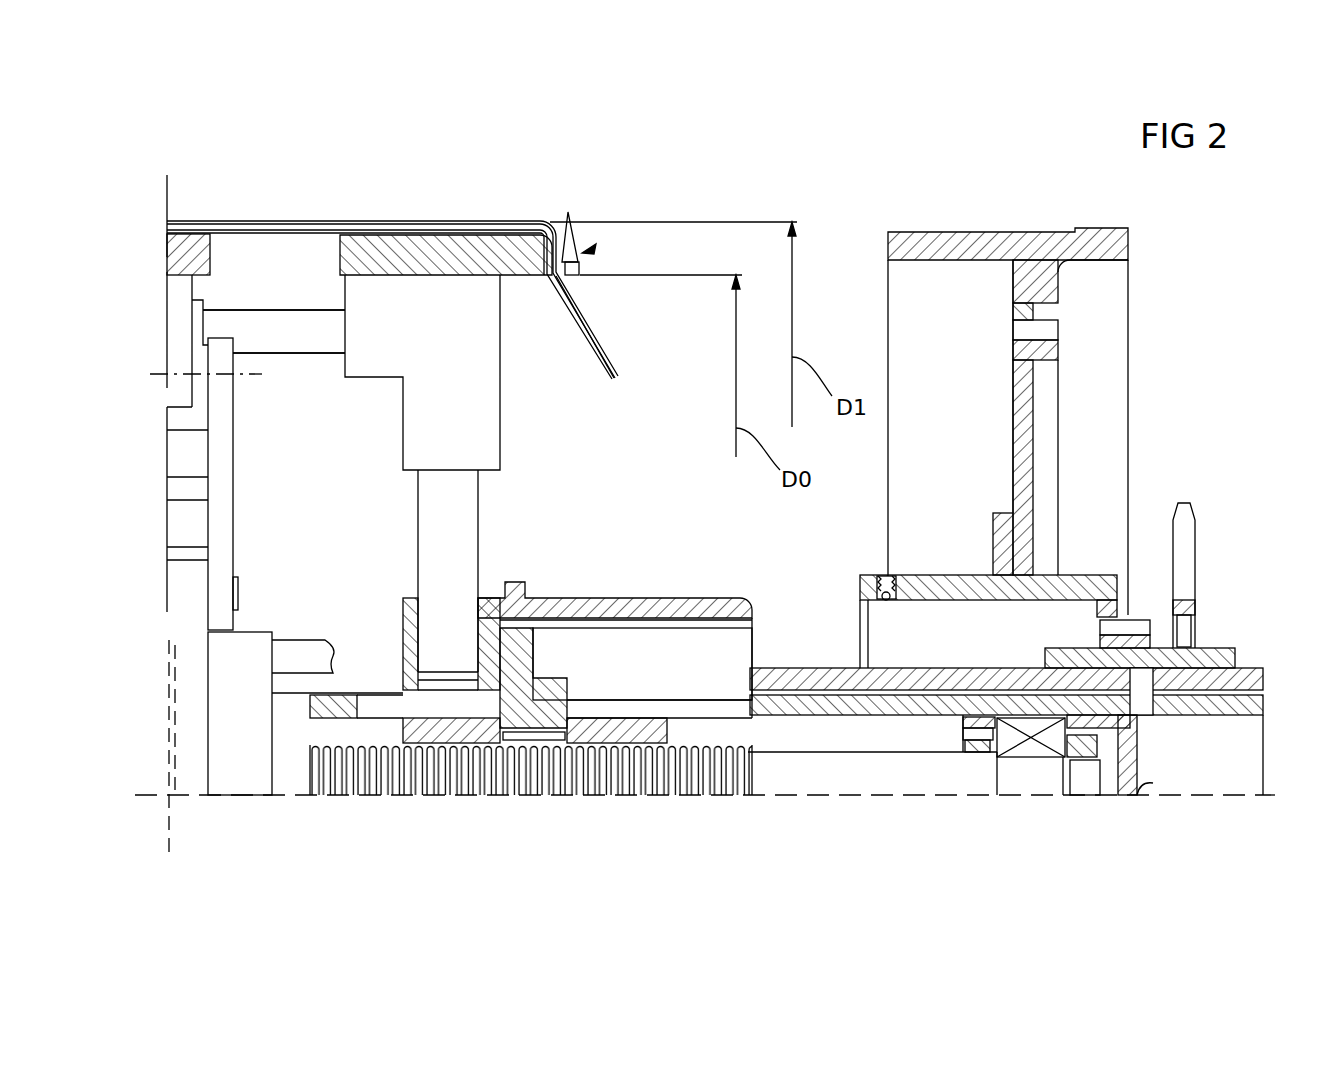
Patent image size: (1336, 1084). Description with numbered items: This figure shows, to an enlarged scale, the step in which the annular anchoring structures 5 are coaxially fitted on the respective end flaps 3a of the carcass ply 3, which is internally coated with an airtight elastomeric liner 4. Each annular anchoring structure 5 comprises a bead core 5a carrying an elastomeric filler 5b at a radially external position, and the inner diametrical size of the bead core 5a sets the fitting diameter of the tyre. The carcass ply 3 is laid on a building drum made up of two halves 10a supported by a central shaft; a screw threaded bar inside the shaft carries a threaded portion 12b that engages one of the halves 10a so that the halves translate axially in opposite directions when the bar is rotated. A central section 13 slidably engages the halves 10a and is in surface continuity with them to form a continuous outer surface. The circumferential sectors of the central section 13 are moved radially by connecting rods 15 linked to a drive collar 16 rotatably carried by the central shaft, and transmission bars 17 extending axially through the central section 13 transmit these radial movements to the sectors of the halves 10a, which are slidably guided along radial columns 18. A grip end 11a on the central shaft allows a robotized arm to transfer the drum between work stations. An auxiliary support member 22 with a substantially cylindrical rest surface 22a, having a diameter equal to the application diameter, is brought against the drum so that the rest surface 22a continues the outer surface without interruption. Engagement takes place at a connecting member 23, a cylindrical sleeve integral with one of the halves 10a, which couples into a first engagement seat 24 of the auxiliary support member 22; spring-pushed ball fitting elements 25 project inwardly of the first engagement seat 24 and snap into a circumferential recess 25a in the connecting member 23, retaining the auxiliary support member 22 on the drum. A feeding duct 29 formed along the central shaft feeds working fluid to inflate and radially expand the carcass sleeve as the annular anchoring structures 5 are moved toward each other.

The carcass ply 3 is at (372, 232).
The end flaps 3a is at (612, 352).
The liner 4 is at (256, 230).
The annular anchoring structures 5 is at (590, 250).
The bead core 5a is at (585, 262).
The elastomeric filler 5b is at (575, 235).
The halves of the building drum 10a is at (497, 258).
The grip end 11a is at (1252, 666).
The threaded portion 12b is at (438, 782).
The central section 13 is at (194, 262).
The connecting rods 15 is at (222, 493).
The drive collar 16 is at (190, 608).
The transmission bars 17 is at (303, 330).
The columns 18 is at (440, 545).
The auxiliary support members 22 is at (1053, 285).
The rest surfaces 22a is at (990, 247).
The connecting members 23 is at (667, 612).
The first engagement seat 24 is at (860, 588).
The fitting elements 25 is at (886, 606).
The recess 25a is at (555, 600).
The feeding duct 29 is at (197, 797).